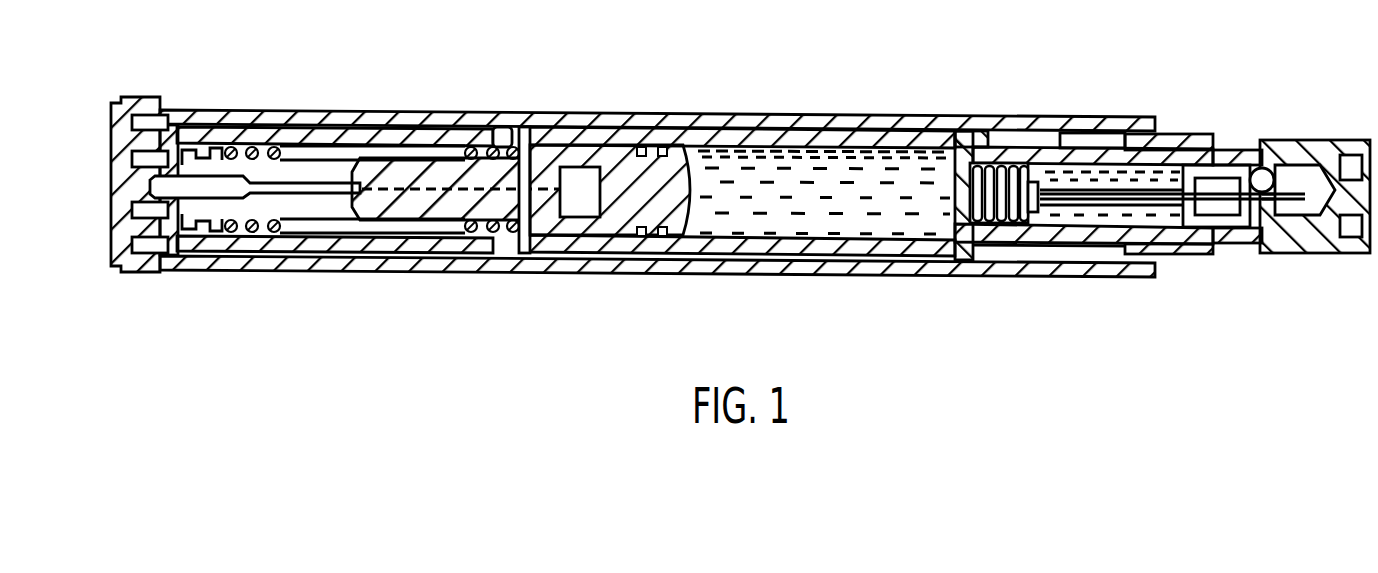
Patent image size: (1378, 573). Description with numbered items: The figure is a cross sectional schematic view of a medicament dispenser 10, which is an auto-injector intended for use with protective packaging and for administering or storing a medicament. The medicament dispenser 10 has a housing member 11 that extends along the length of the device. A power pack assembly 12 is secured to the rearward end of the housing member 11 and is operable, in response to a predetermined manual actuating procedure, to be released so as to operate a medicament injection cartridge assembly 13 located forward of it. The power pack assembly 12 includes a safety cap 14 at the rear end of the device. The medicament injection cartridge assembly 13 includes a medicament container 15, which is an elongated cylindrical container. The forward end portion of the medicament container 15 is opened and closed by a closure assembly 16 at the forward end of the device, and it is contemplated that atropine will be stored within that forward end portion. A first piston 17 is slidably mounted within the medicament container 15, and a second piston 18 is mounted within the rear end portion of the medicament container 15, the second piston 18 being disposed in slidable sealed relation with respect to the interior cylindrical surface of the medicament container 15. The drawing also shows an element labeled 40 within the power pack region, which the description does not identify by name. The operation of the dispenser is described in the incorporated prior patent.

The medicament dispenser 10 is at (803, 90).
The housing member 11 is at (893, 110).
The power pack assembly 12 is at (402, 117).
The medicament injection cartridge assembly 13 is at (1023, 139).
The safety cap 14 is at (140, 272).
The medicament container 15 is at (742, 126).
The closure assembly 16 is at (1349, 258).
The first piston 17 is at (984, 163).
The second piston 18 is at (678, 213).
The plunger rod 40 is at (208, 185).